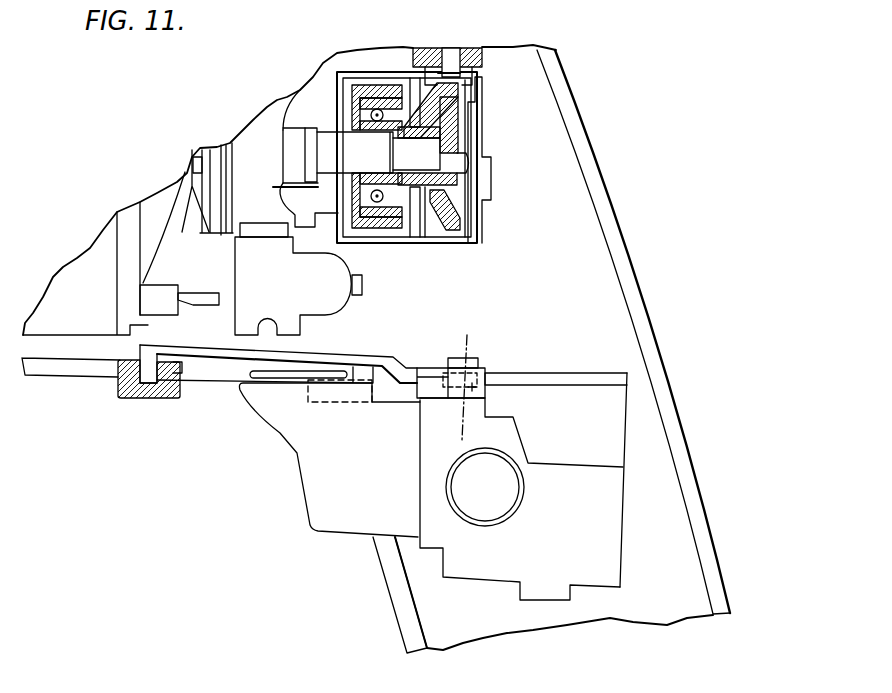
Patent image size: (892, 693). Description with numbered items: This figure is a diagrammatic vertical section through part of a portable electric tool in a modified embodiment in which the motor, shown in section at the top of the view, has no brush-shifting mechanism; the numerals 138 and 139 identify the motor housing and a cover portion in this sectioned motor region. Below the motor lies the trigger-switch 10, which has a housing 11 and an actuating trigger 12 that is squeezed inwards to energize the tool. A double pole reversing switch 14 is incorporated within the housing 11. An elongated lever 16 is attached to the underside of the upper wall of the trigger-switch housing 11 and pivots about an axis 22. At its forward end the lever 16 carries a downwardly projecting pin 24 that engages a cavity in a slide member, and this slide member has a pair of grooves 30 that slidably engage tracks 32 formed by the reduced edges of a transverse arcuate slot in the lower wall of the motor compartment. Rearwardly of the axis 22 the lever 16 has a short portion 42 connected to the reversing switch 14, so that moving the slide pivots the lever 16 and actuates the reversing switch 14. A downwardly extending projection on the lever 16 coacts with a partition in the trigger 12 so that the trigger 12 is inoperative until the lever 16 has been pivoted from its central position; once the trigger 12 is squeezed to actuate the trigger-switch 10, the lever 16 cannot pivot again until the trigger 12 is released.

The trigger-switch 10 is at (593, 520).
The housing 11 is at (622, 555).
The actuating trigger 12 is at (292, 447).
The double pole reversing switch 14 is at (587, 395).
The elongated lever 16 is at (327, 353).
The axis 22 is at (472, 335).
The pin 24 is at (138, 353).
The grooves 30 is at (117, 389).
The tracks 32 is at (187, 374).
The short portion 42 is at (485, 368).
The motor housing 138 is at (344, 257).
The motor cover 139 is at (260, 223).